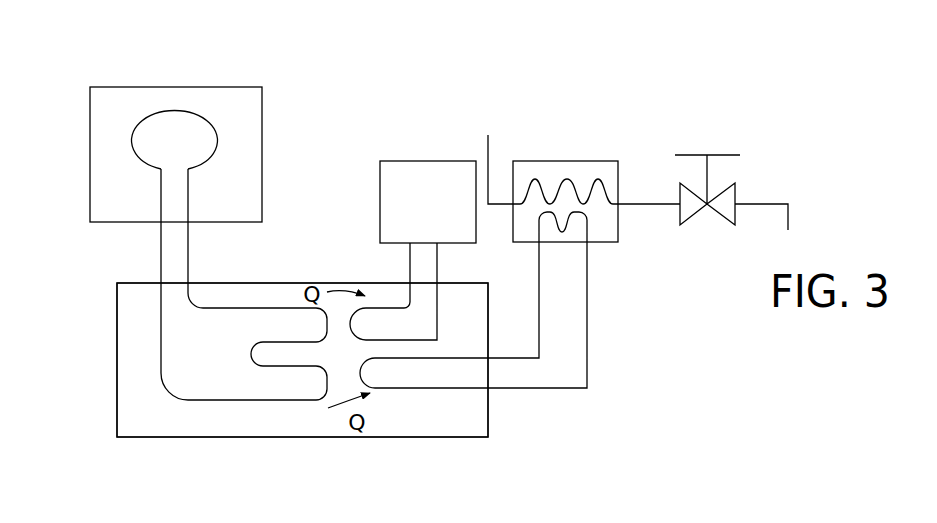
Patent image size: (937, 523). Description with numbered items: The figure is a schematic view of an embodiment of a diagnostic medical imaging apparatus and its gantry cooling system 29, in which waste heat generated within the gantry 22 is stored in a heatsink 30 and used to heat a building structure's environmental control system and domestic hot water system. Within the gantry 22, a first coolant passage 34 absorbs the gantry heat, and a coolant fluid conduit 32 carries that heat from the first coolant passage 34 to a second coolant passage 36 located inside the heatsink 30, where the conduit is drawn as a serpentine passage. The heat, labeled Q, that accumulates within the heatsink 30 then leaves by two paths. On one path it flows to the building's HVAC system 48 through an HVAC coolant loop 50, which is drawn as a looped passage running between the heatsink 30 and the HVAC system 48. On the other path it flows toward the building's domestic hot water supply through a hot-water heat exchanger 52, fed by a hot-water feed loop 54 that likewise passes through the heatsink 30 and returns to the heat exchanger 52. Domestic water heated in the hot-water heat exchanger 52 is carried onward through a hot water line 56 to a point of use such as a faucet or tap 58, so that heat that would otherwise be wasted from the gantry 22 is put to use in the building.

The gantry 22 is at (268, 124).
The first coolant passage 34 is at (180, 110).
The coolant fluid conduit 32 is at (158, 237).
The second coolant passage 36 is at (238, 404).
The gantry cooling system 29 is at (112, 293).
The heatsink 30 is at (115, 415).
The HVAC system 48 is at (423, 160).
The HVAC coolant loop 50 is at (407, 263).
The hot-water heat exchanger 52 is at (561, 160).
The hot-water feed loop 54 is at (580, 292).
The hot water line 56 is at (647, 203).
The faucet or tap 58 is at (707, 208).